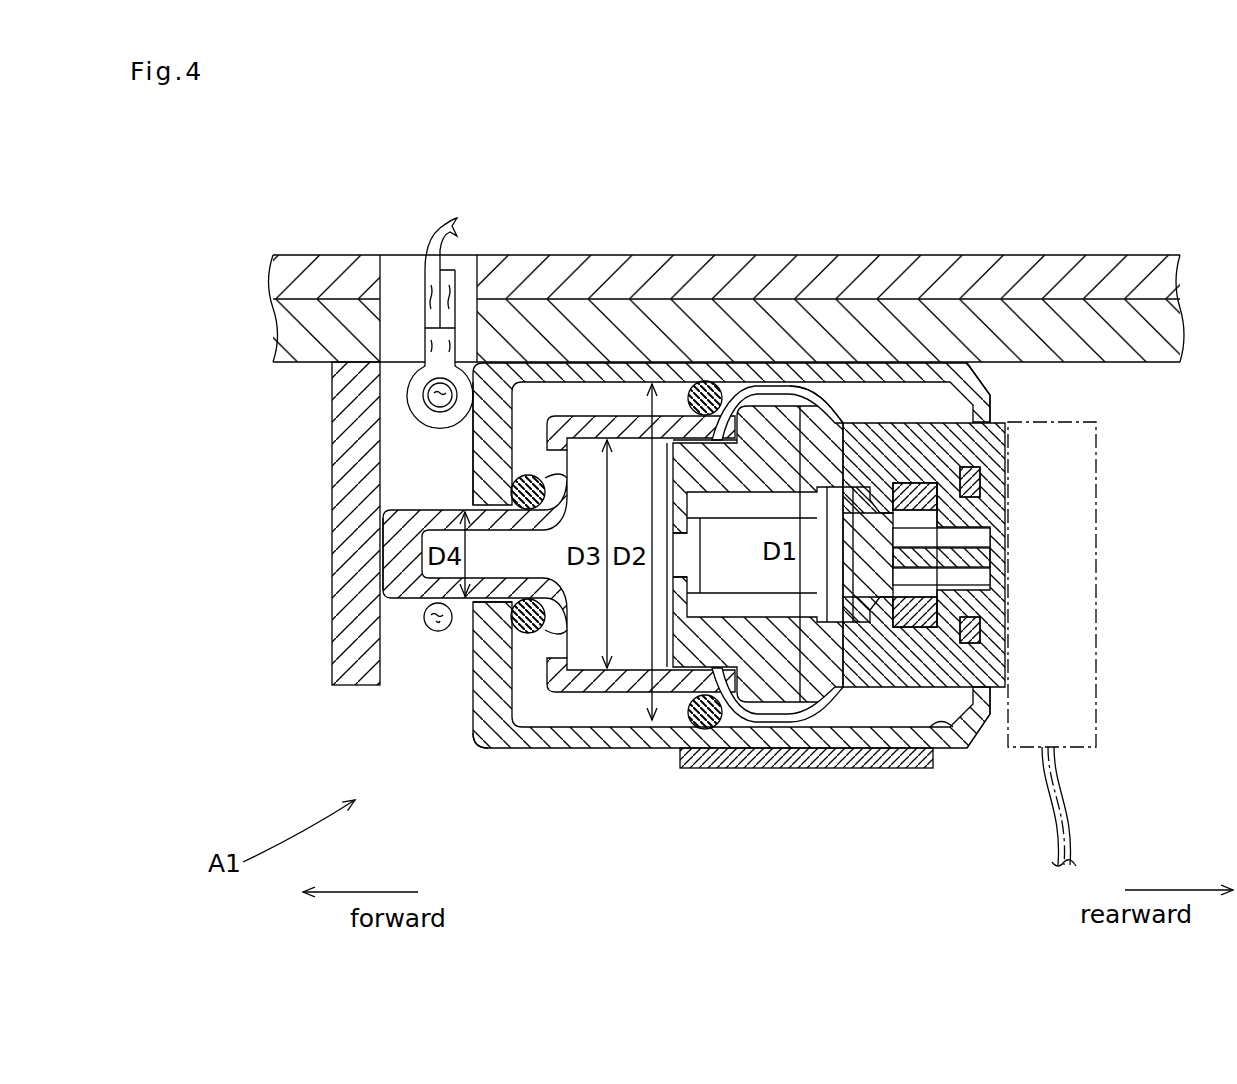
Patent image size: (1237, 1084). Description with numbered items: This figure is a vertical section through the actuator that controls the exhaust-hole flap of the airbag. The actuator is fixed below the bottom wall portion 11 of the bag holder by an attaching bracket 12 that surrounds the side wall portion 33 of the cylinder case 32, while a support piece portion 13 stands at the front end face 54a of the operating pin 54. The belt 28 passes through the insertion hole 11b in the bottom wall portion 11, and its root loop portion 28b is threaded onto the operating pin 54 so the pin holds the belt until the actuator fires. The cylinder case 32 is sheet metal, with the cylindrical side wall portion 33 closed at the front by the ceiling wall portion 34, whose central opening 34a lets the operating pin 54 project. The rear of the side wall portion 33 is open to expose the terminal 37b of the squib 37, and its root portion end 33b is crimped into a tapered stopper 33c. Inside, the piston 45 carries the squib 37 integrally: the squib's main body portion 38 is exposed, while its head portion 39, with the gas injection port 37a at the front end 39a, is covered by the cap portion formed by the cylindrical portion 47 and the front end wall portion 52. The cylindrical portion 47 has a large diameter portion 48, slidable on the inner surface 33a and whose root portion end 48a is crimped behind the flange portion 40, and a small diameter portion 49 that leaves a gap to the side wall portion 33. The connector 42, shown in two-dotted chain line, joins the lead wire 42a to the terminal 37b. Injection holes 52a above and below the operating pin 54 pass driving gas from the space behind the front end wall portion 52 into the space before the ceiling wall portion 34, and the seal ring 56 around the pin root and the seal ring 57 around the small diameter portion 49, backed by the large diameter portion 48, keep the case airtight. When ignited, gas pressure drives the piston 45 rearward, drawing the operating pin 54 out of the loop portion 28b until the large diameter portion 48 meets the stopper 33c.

The bottom wall portion 11 is at (1082, 272).
The insertion hole 11b is at (400, 272).
The attaching bracket 12 is at (905, 769).
The support piece portion 13 is at (330, 615).
The belt 28 is at (443, 222).
The loop portion 28b is at (432, 630).
The cylinder case 32 is at (642, 762).
The side wall portion 33 is at (610, 746).
The inner surface 33a is at (966, 740).
The root portion end 33b is at (990, 690).
The stopper 33c is at (975, 372).
The ceiling wall portion 34 is at (480, 455).
The opening 34a is at (470, 604).
The squib 37 is at (934, 627).
The gas injection port 37a is at (680, 548).
The terminal 37b is at (1000, 510).
The main body portion 38 is at (1000, 453).
The head portion 39 is at (664, 642).
The front end 39a is at (668, 472).
The flange portion 40 is at (590, 398).
The connector 42 is at (1080, 565).
The lead wire 42a is at (1052, 780).
The piston 45 is at (407, 402).
The cylindrical portion 47 is at (772, 720).
The large diameter portion 48 is at (797, 542).
The root portion end 48a is at (845, 397).
The small diameter portion 49 is at (722, 393).
The front end wall portion 52 is at (527, 634).
The injection holes 52a is at (552, 464).
The operating pin 54 is at (492, 490).
The front end face 54a is at (382, 546).
The seal ring 56 is at (478, 746).
The seal ring 57 is at (724, 730).